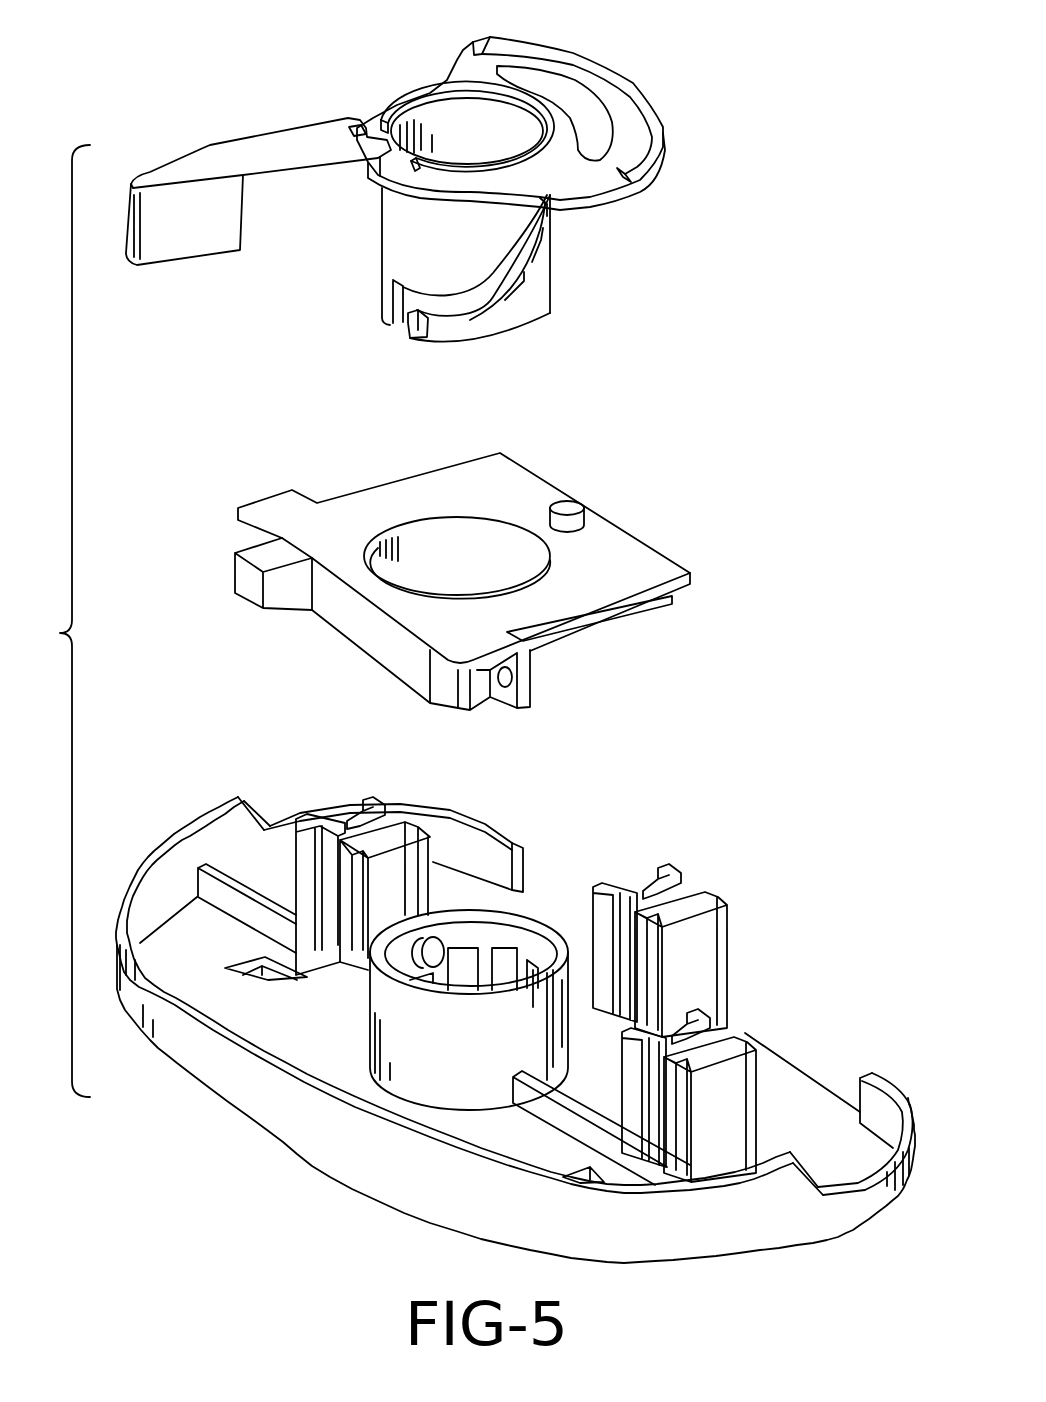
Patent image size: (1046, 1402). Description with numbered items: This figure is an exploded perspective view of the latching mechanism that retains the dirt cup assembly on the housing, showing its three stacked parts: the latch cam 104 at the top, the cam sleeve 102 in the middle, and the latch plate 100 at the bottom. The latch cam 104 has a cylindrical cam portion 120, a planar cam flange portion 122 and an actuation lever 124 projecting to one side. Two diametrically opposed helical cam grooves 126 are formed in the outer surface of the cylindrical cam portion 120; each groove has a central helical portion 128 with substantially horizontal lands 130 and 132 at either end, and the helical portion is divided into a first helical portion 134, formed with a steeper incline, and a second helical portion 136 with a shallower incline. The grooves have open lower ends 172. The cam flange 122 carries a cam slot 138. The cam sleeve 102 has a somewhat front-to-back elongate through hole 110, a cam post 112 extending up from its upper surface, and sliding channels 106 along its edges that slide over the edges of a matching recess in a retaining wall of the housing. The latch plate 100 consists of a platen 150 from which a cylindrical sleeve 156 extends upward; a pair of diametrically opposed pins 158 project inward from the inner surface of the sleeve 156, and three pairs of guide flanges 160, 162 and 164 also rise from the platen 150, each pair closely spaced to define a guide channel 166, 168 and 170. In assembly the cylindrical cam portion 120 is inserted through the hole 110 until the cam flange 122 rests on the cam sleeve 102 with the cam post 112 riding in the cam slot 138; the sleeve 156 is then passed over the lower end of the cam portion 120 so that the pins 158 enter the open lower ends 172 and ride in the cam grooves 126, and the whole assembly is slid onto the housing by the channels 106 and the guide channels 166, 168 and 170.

The latch plate 100 is at (662, 787).
The cam sleeve 102 is at (656, 515).
The latch cam 104 is at (636, 35).
The sliding channels 106 is at (563, 633).
The through hole 110 is at (478, 520).
The cam post 112 is at (573, 499).
The cylindrical cam portion 120 is at (388, 249).
The planar cam flange portion 122 is at (668, 113).
The actuation lever 124 is at (262, 137).
The helical cam grooves 126 is at (470, 322).
The helical portion 128 is at (520, 265).
The horizontal land 130 is at (548, 208).
The horizontal land 132 is at (426, 321).
The first helical portion 134 is at (546, 247).
The second helical portion 136 is at (508, 299).
The cam slot 138 is at (595, 95).
The platen 150 is at (792, 1083).
The cylindrical sleeve 156 is at (525, 922).
The pins 158 is at (430, 950).
The guide flanges 160 is at (740, 1027).
The guide flanges 162 is at (720, 885).
The guide flanges 164 is at (425, 815).
The guide channel 166 is at (680, 1033).
The guide channel 168 is at (650, 893).
The guide channel 170 is at (357, 823).
The open lower ends 172 is at (393, 325).